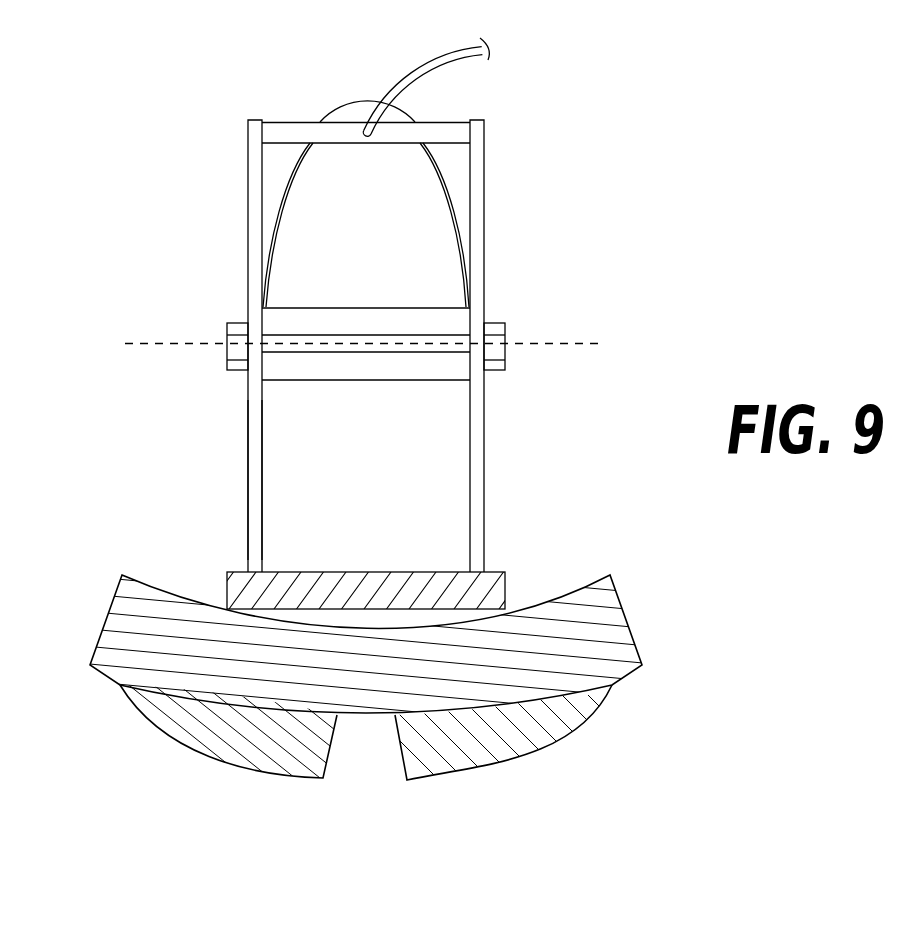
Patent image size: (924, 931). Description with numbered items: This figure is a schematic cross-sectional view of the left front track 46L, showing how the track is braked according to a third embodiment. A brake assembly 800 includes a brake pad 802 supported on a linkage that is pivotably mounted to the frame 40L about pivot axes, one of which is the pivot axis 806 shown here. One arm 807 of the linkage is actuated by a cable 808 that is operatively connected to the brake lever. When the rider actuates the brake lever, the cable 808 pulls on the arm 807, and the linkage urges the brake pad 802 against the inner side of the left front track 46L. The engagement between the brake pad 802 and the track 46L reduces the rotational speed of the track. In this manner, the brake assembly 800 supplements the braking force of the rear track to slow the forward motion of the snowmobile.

The brake assembly 800 is at (588, 244).
The brake pad 802 is at (236, 590).
The pivot axis 806 is at (173, 338).
The arm 807 is at (255, 432).
The cable 808 is at (420, 67).
The frame 40L is at (298, 327).
The left front track 46L is at (130, 602).